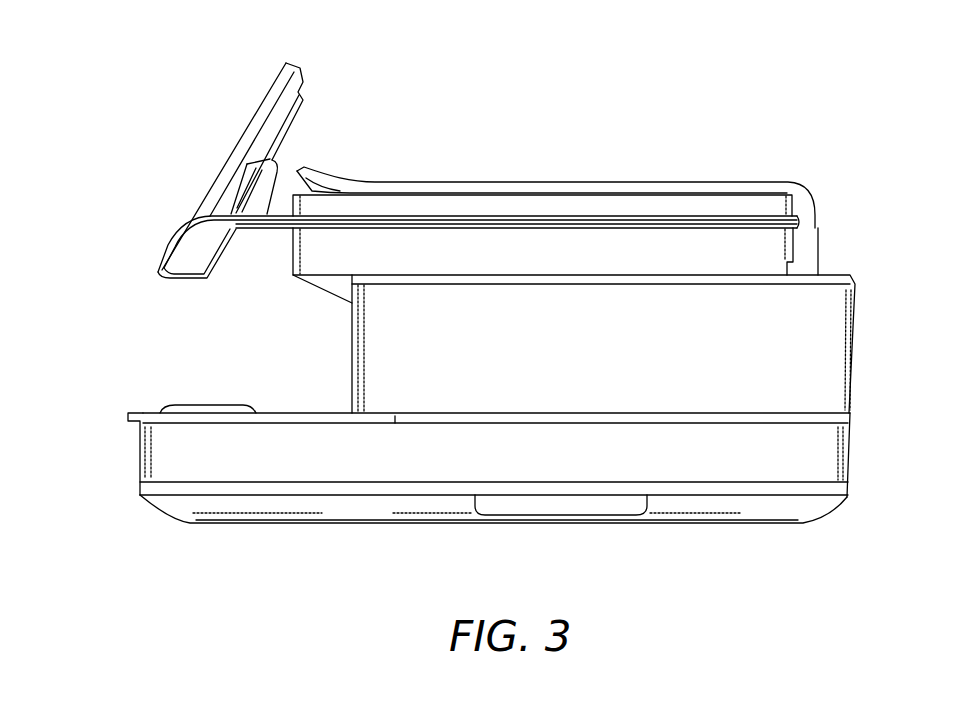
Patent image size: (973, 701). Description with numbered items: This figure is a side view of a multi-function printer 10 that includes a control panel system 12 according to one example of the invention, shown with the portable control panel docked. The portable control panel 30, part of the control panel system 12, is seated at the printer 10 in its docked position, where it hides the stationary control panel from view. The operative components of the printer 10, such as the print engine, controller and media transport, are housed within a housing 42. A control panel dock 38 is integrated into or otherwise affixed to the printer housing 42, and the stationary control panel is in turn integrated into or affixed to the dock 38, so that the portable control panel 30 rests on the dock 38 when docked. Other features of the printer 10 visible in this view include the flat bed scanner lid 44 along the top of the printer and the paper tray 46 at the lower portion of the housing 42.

The multi-function printer 10 is at (873, 211).
The control panel system 12 is at (297, 150).
The portable control panel 30 is at (283, 74).
The control panel dock 38 is at (193, 265).
The housing 42 is at (836, 316).
The flat bed scanner lid 44 is at (517, 183).
The paper tray 46 is at (300, 412).